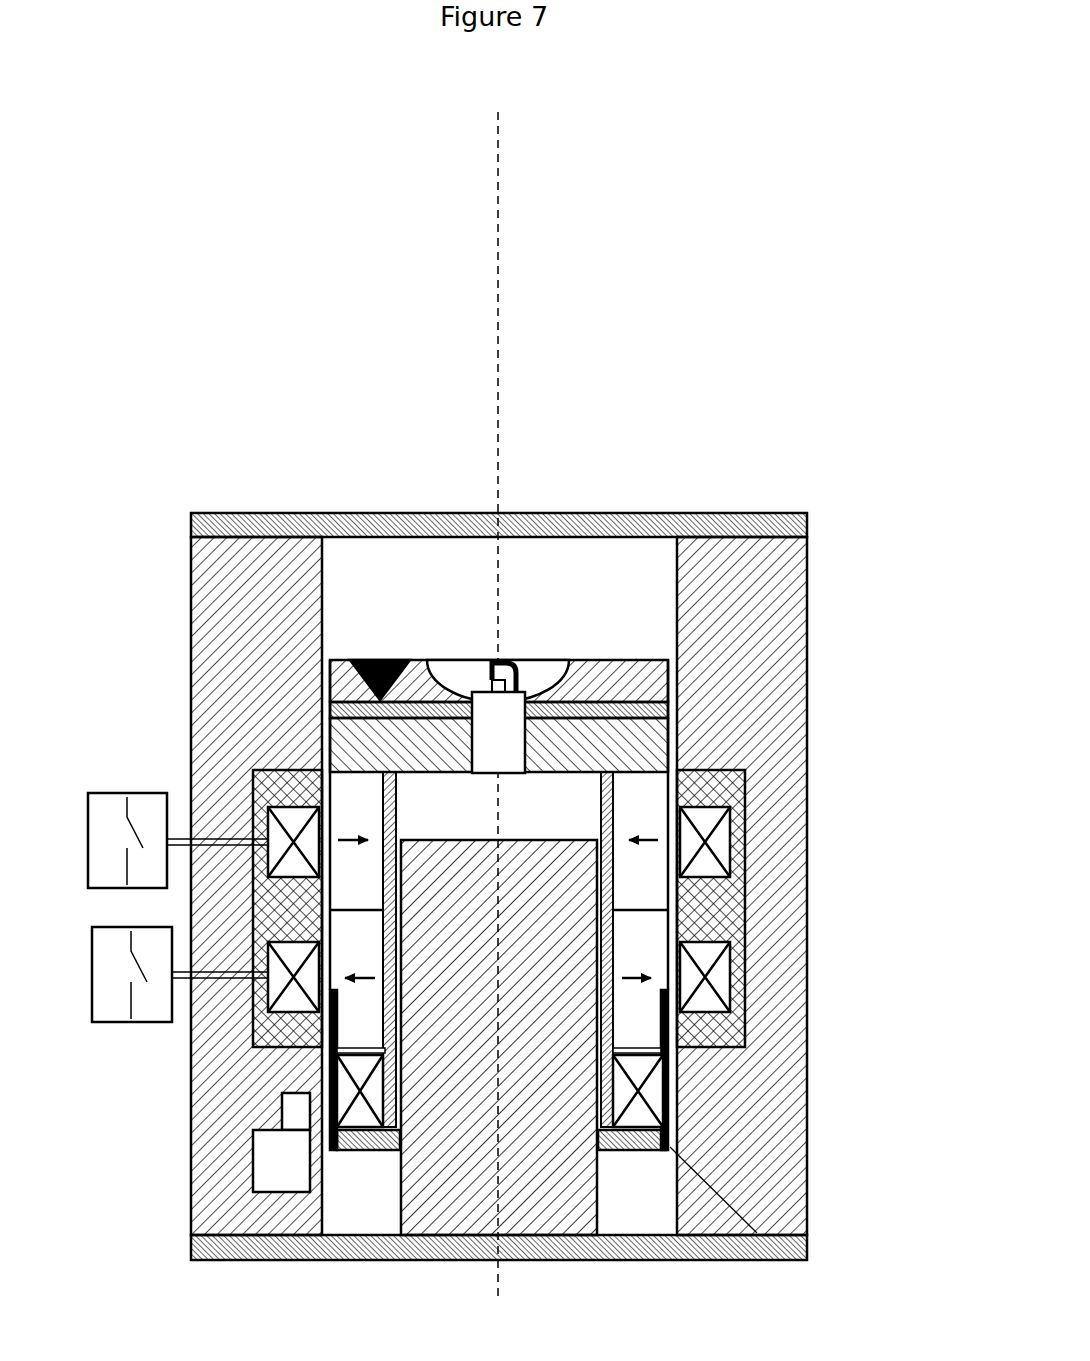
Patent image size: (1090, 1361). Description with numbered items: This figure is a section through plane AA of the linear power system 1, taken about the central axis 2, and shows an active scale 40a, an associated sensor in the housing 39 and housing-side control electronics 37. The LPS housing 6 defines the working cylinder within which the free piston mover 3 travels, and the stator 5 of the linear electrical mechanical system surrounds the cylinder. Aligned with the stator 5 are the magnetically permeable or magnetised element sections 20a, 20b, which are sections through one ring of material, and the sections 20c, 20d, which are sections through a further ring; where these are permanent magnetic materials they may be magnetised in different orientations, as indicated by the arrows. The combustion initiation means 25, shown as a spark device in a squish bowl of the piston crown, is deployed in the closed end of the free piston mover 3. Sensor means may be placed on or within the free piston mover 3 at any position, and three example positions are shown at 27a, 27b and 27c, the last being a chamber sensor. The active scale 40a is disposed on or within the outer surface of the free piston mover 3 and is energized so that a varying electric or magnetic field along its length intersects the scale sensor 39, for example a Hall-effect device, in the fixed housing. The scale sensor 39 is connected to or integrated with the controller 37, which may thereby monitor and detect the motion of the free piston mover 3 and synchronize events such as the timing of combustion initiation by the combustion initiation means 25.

The linear power system 1 is at (751, 470).
The section plane AA axis 2 is at (499, 357).
The free piston mover 3 is at (370, 747).
The stator 5 is at (752, 965).
The LPS housing 6 is at (737, 588).
The magnetically permeable or magnetised element section 20a is at (356, 875).
The magnetically permeable or magnetised element section 20b is at (640, 875).
The magnetically permeable or magnetised element section 20c is at (356, 951).
The magnetically permeable or magnetised element section 20d is at (639, 951).
The combustion initiation means 25 is at (495, 747).
The sensor means 27a is at (785, 1260).
The sensor means 27b is at (673, 707).
The chamber sensor 27c is at (378, 660).
The controller 37 is at (245, 1168).
The scale sensor 39 is at (280, 1113).
The active scale 40a is at (350, 1150).